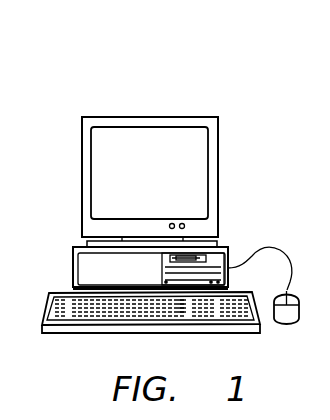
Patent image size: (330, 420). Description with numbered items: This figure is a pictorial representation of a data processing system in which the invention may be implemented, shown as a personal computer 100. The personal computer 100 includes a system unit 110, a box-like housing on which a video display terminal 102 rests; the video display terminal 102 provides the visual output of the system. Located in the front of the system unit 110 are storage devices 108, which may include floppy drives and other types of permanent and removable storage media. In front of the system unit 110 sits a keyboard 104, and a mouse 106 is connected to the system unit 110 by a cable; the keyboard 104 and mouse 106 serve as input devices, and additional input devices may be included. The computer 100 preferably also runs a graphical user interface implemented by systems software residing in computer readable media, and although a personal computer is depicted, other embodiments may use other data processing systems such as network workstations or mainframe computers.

The personal computer 100 is at (167, 95).
The video display terminal 102 is at (97, 174).
The keyboard 104 is at (70, 313).
The mouse 106 is at (287, 327).
The storage devices 108 is at (205, 259).
The system unit 110 is at (72, 268).